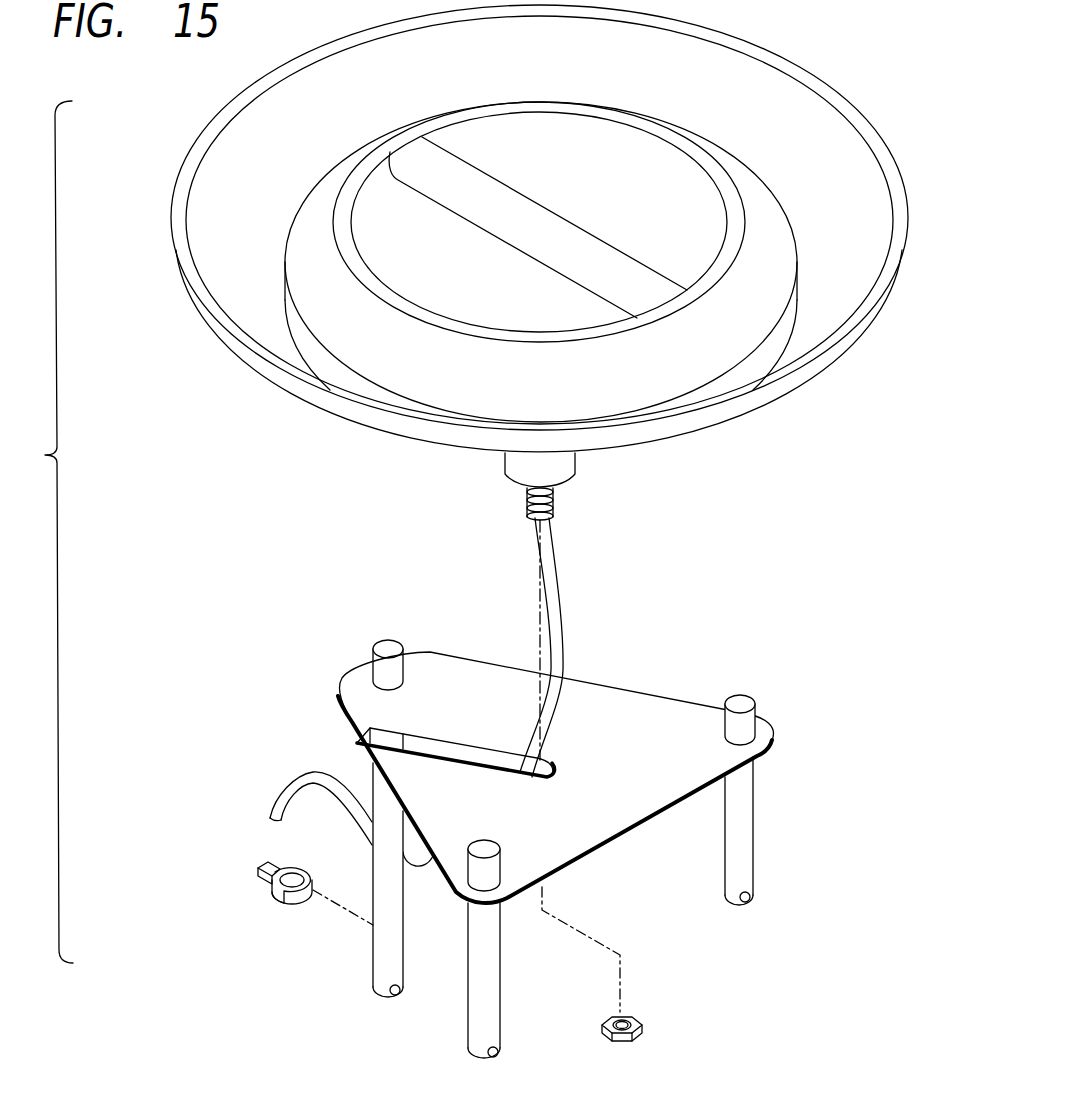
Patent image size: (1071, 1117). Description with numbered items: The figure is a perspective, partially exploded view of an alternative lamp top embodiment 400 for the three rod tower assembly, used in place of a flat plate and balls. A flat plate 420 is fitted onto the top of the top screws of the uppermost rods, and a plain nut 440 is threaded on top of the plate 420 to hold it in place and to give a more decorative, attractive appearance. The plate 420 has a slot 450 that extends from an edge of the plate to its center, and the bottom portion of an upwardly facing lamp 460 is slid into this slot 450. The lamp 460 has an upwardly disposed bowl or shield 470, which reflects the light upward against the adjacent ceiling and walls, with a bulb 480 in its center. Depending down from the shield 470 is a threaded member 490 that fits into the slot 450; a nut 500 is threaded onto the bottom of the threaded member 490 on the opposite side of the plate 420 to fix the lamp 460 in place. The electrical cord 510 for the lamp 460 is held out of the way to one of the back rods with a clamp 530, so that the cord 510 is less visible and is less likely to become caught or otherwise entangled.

The lamp top embodiment 400 is at (792, 503).
The flat plate 420 is at (637, 713).
The plain nut 440 is at (380, 648).
The slot 450 is at (433, 750).
The lamp 460 is at (313, 398).
The bowl or shield 470 is at (787, 107).
The bulb 480 is at (563, 230).
The threaded member 490 is at (553, 507).
The nut 500 is at (620, 1040).
The electrical cord 510 is at (280, 797).
The clamp 530 is at (280, 897).